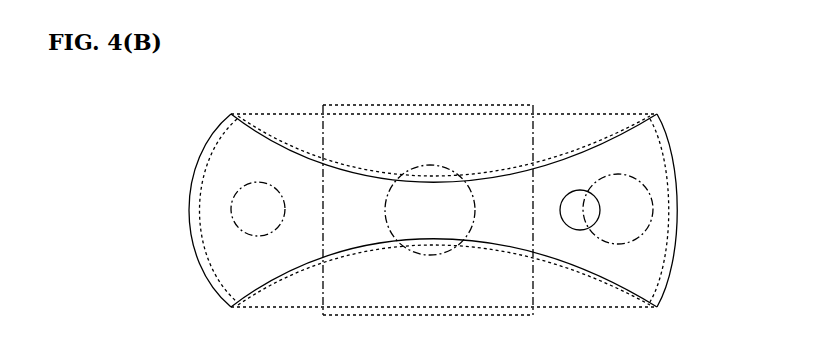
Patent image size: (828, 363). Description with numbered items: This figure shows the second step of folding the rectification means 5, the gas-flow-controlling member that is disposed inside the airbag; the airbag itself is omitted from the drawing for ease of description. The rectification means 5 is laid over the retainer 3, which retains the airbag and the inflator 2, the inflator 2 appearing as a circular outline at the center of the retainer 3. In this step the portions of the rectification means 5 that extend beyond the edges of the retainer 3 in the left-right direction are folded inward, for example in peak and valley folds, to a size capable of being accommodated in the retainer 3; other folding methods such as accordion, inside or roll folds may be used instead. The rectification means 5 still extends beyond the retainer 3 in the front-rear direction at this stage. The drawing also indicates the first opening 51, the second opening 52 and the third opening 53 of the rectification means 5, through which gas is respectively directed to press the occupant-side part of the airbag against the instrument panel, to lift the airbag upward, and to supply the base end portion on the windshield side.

The inflator 2 is at (430, 210).
The retainer 3 is at (430, 105).
The rectification means 5 is at (669, 107).
The first opening 51 is at (653, 204).
The second opening 52 is at (560, 210).
The third opening 53 is at (255, 183).